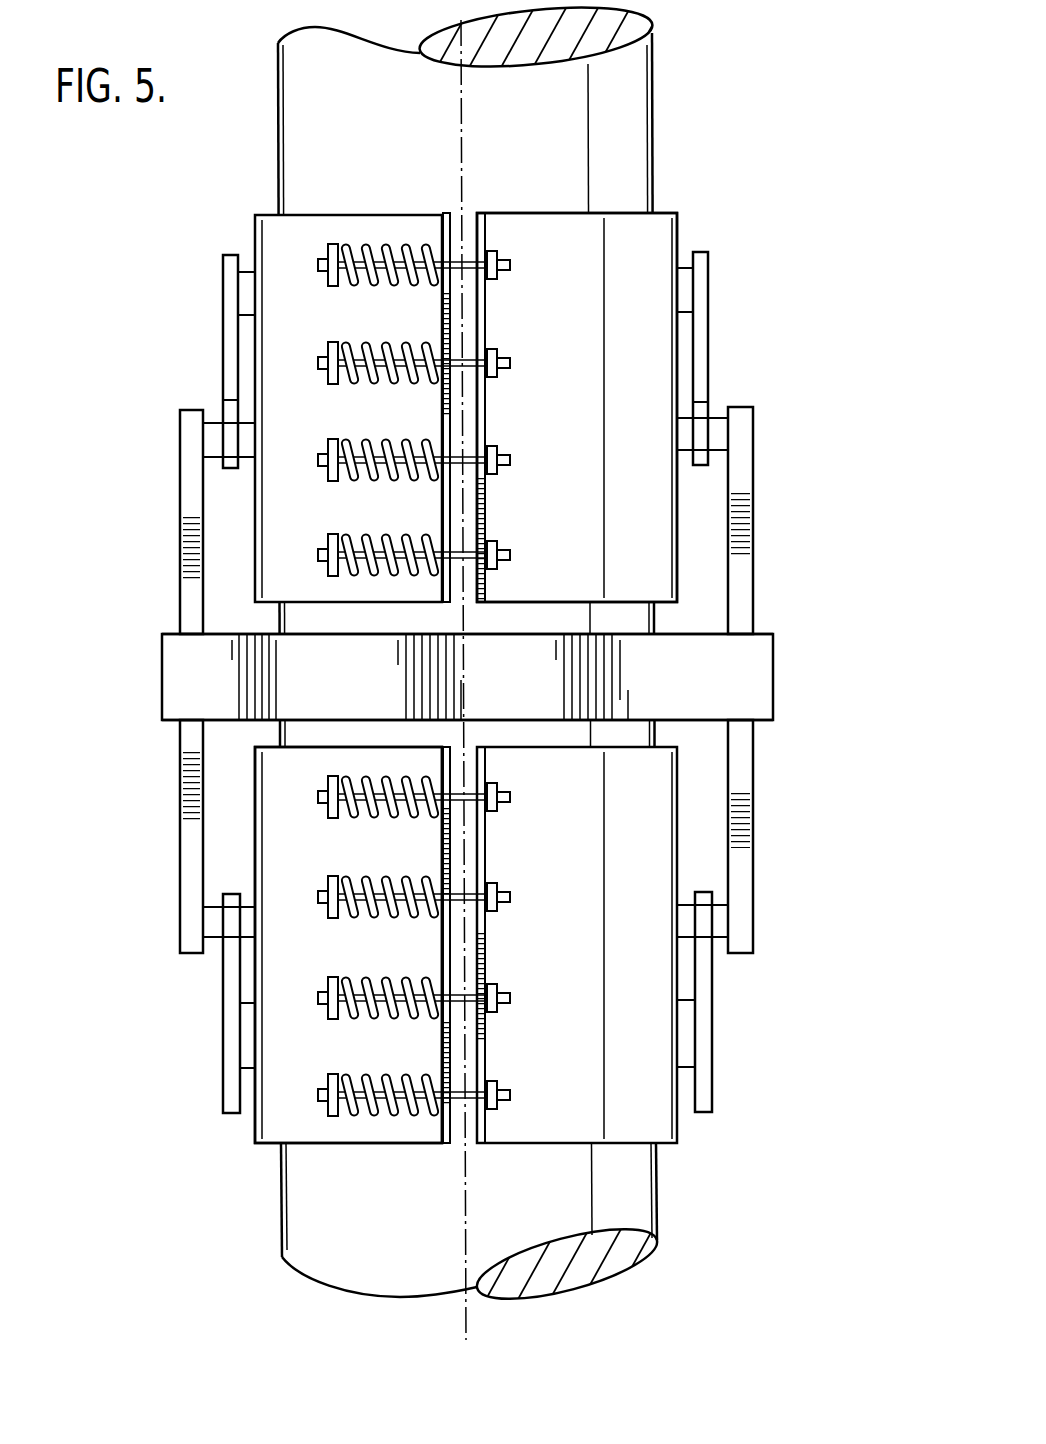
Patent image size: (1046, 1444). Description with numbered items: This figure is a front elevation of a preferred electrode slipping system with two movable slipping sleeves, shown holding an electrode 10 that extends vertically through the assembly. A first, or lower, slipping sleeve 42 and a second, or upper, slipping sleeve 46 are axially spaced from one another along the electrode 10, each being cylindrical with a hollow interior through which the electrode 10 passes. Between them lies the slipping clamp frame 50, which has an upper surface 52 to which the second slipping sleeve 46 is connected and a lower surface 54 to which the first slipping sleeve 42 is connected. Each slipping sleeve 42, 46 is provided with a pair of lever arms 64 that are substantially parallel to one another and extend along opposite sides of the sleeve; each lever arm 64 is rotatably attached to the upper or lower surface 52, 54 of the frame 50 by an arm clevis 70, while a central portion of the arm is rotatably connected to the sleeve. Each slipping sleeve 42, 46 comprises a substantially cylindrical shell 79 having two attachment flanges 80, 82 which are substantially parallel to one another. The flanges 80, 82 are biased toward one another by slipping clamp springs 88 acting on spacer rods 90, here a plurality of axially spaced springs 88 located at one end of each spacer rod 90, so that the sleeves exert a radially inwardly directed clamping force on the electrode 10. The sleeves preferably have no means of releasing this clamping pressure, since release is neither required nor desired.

The electrode 10 is at (645, 78).
The first slipping sleeve 42 is at (625, 1150).
The second slipping sleeve 46 is at (662, 228).
The slipping clamp frame 50 is at (758, 668).
The upper surface 52 is at (773, 636).
The lower surface 54 is at (773, 720).
The lever arm 64 is at (222, 280).
The arm clevis 70 is at (755, 524).
The cylindrical shell 79 is at (268, 352).
The attachment flange 80 is at (448, 213).
The attachment flange 82 is at (477, 213).
The slipping clamp spring 88 is at (272, 1015).
The spacer rod 90 is at (325, 905).